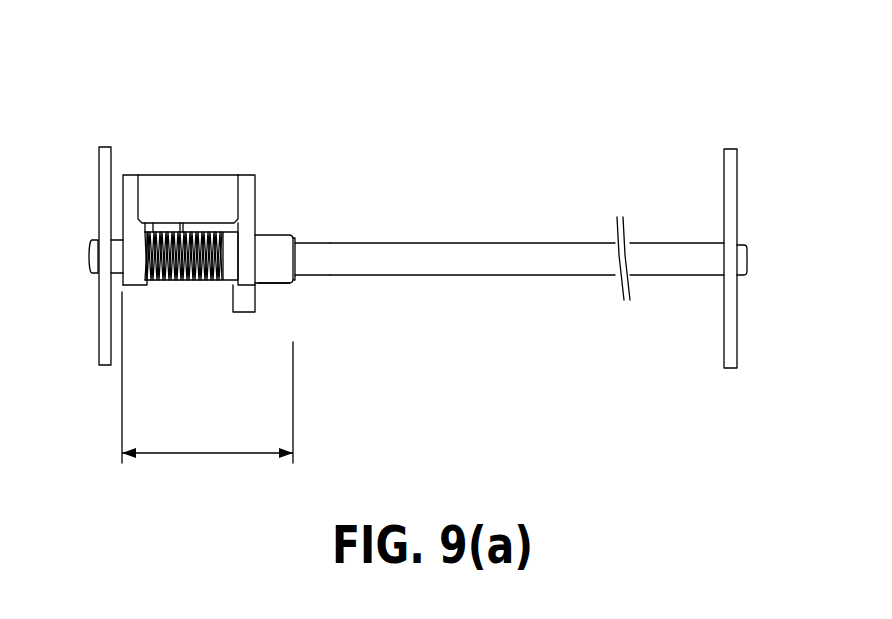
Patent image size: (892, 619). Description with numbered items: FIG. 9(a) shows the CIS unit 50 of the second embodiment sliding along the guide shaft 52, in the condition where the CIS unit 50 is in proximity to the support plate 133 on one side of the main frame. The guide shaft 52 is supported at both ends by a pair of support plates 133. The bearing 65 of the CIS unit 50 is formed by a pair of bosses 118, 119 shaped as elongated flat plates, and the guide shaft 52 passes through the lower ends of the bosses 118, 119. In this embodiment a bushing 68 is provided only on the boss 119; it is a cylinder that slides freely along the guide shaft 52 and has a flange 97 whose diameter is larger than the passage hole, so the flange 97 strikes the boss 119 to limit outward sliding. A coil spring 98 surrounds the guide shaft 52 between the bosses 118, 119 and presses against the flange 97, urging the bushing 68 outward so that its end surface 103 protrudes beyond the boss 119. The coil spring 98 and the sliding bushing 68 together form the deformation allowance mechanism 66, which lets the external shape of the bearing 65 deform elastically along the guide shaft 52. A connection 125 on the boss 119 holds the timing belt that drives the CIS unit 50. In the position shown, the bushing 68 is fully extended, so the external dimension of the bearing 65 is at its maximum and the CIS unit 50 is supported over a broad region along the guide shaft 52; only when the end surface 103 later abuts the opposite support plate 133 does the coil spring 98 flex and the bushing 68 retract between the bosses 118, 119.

The CIS unit 50 is at (249, 78).
The guide shaft 52 is at (657, 261).
The bearing 65 is at (270, 285).
The deformation allowance mechanism 66 is at (164, 300).
The bushing 68 is at (272, 246).
The flange 97 is at (228, 283).
The coil spring 98 is at (197, 240).
The end surface 103 is at (300, 248).
The boss 118 is at (136, 185).
The boss 119 is at (246, 182).
The connection 125 is at (247, 297).
The support plate 133 is at (98, 177).